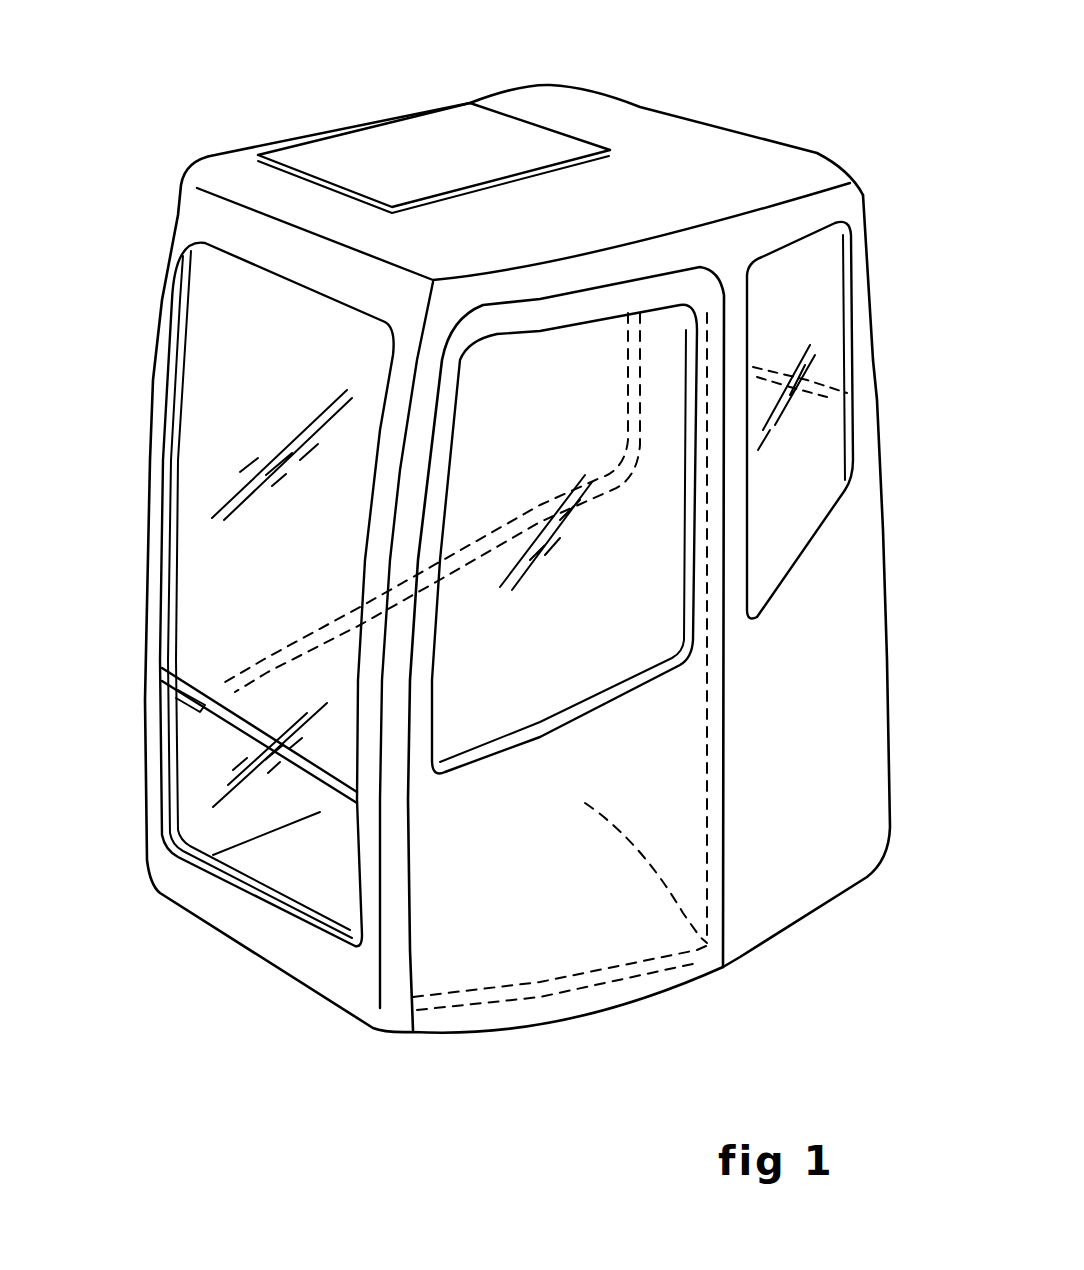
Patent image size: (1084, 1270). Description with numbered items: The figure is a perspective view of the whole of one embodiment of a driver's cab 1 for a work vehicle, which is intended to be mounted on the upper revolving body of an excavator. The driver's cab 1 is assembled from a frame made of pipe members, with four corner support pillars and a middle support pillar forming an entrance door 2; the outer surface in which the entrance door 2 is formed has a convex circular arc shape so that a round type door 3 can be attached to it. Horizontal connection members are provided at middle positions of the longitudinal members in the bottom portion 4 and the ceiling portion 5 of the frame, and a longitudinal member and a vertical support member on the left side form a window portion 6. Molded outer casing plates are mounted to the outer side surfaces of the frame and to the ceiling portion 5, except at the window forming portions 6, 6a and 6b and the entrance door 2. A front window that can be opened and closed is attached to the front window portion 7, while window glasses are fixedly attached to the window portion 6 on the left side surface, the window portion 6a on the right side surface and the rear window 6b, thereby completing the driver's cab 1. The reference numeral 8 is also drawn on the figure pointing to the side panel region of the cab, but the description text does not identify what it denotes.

The driver's cab 1 is at (135, 234).
The entrance door 2 is at (722, 978).
The round type door 3 is at (575, 940).
The bottom portion 4 is at (333, 910).
The ceiling portion 5 is at (672, 135).
The window portion 6 is at (253, 448).
The window portion 6a is at (812, 466).
The rear window 6b is at (822, 295).
The front window portion 7 is at (200, 605).
The rear side panel 8 is at (887, 712).